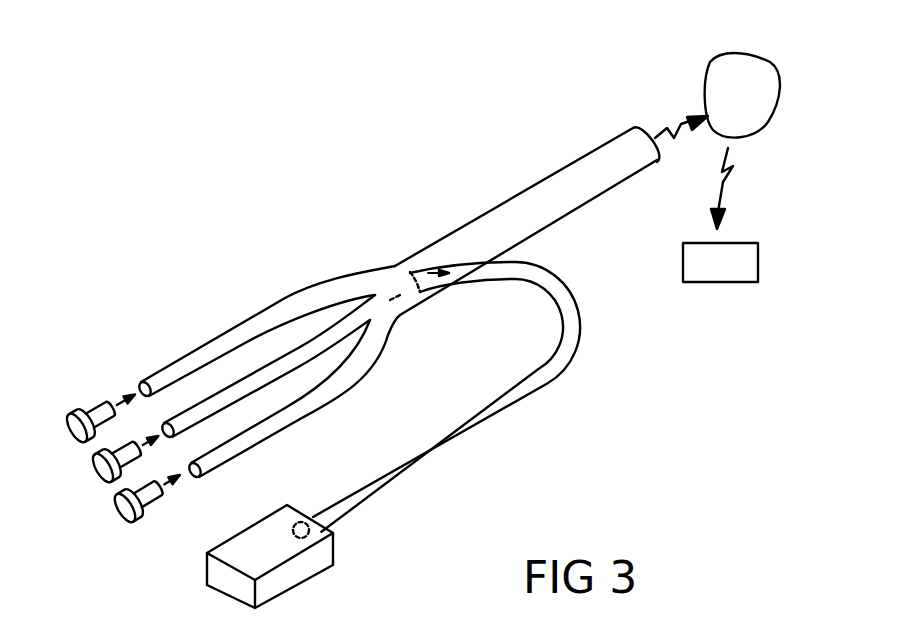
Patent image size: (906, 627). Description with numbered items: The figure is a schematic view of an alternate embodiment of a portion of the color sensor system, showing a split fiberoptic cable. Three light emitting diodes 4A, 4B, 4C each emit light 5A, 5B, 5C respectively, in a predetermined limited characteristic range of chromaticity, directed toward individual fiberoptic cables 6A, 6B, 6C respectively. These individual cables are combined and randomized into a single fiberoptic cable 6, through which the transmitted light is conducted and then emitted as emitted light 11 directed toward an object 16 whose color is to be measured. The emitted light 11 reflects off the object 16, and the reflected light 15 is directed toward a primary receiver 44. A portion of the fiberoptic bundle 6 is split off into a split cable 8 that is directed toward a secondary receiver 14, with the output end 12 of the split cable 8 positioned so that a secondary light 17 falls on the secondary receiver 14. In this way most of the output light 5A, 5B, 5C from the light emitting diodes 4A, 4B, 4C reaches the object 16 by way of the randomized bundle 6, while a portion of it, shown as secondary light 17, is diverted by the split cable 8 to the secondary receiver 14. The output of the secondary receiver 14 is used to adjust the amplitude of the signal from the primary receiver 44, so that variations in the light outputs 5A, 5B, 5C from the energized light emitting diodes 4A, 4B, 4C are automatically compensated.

The light emitting diode 4A is at (92, 407).
The light emitting diode 4B is at (93, 455).
The light emitting diode 4C is at (110, 498).
The light output 5A is at (115, 402).
The light output 5B is at (138, 446).
The light output 5C is at (165, 487).
The fiberoptic cable 6 is at (563, 183).
The fiberoptic cable 6A is at (240, 333).
The fiberoptic cable 6B is at (246, 388).
The fiberoptic cable 6C is at (233, 444).
The split cable 8 is at (460, 437).
The emitted light 11 is at (663, 127).
The output end 12 is at (333, 518).
The secondary receiver 14 is at (303, 570).
The reflected light 15 is at (730, 182).
The object 16 is at (760, 93).
The secondary light 17 is at (405, 283).
The primary receiver 44 is at (733, 273).